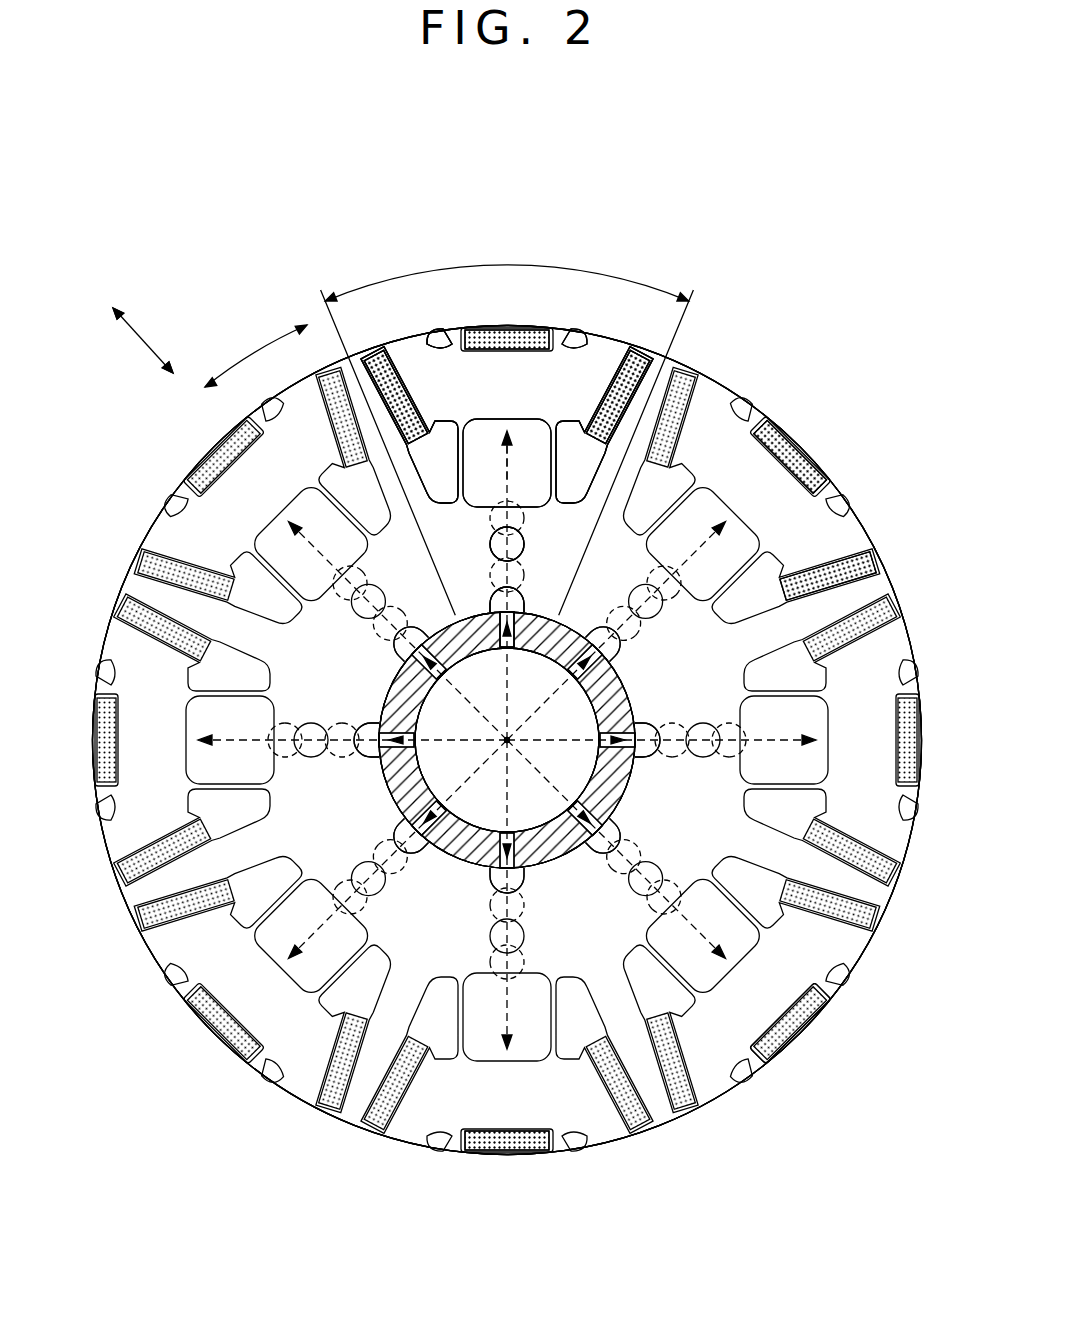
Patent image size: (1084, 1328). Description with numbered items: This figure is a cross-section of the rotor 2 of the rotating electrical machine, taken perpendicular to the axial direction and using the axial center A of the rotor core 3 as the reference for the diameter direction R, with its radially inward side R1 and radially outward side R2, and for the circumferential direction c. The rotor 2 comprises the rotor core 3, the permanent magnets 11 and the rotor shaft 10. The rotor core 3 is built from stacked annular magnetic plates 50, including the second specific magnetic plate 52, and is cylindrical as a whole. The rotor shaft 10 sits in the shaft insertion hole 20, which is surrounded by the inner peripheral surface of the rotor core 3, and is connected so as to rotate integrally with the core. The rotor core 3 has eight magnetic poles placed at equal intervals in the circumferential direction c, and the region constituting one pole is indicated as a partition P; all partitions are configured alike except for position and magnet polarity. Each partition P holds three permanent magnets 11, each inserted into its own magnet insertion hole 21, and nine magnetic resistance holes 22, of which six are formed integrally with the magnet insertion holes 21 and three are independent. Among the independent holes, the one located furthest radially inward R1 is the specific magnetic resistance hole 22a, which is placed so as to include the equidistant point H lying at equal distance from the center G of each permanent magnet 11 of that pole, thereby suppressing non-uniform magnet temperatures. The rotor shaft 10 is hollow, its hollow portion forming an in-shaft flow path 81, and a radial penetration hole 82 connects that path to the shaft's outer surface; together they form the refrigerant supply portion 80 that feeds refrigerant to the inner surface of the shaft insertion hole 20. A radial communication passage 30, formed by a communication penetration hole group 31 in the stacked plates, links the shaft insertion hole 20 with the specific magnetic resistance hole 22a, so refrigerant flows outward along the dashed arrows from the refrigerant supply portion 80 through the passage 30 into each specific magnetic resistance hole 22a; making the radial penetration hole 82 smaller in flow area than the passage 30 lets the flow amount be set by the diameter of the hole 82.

The rotor 2 is at (271, 248).
The rotor core 3 is at (745, 1090).
The rotor shaft 10 is at (453, 857).
The permanent magnet 11 is at (414, 345).
The shaft insertion hole 20 is at (397, 772).
The magnet insertion hole 21 is at (537, 335).
The magnetic resistance hole 22 is at (348, 360).
The specific magnetic resistance hole 22a is at (510, 425).
The radial communication passage 30 is at (507, 599).
The communication penetration hole group 31 is at (582, 918).
The magnetic plate 50 is at (507, 740).
The second specific magnetic plate 52 is at (808, 1032).
The refrigerant supply portion 80 is at (507, 587).
The in-shaft flow path 81 is at (554, 734).
The radial penetration hole 82 is at (522, 596).
The center of permanent magnet G is at (505, 330).
The equidistant point H is at (512, 458).
The partition P is at (506, 271).
The diameter direction R is at (143, 340).
The radially inward R1 is at (175, 381).
The radially outward R2 is at (114, 299).
The circumferential direction c is at (256, 356).
The axial center A is at (507, 742).